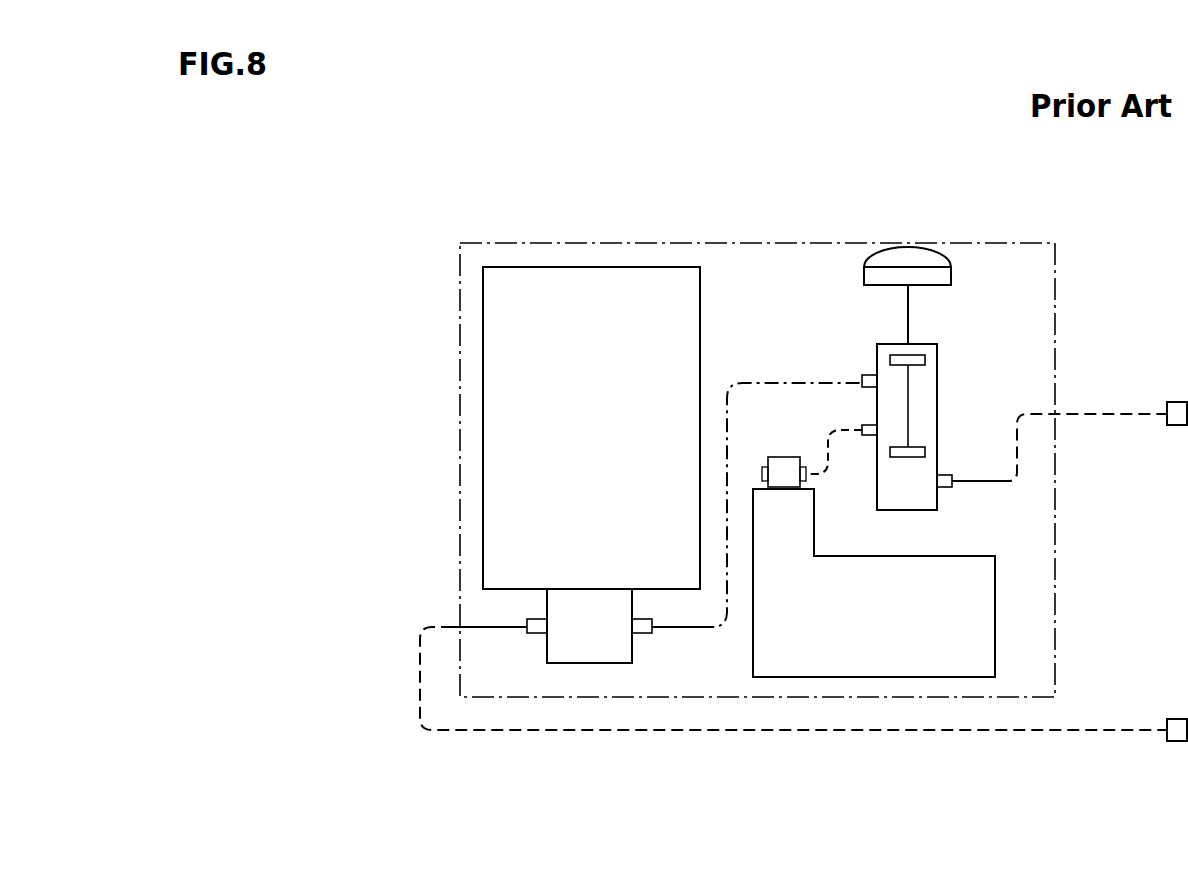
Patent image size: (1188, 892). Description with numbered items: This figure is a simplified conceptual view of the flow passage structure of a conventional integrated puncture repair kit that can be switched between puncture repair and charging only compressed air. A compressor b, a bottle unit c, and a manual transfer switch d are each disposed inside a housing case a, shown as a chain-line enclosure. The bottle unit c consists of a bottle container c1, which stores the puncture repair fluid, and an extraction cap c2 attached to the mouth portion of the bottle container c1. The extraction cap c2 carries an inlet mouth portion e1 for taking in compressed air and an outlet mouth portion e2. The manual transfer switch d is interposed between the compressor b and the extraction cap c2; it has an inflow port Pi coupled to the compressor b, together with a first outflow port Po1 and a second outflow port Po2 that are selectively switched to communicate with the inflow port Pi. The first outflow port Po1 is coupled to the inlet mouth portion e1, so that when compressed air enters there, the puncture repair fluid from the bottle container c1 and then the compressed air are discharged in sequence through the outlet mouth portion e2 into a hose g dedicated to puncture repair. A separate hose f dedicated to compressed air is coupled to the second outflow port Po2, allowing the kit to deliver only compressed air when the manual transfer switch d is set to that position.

The housing case a is at (526, 243).
The compressor b is at (792, 677).
The bottle unit c is at (490, 465).
The bottle container c1 is at (483, 405).
The extraction cap c2 is at (547, 607).
The manual transfer switch d is at (960, 369).
The inlet mouth portion e1 is at (645, 633).
The outlet mouth portion e2 is at (537, 633).
The hose dedicated to compressed air f is at (1126, 414).
The hose dedicated to puncture repair g is at (1027, 733).
The inflow port Pi is at (866, 449).
The first outflow port Po1 is at (872, 362).
The second outflow port Po2 is at (966, 494).